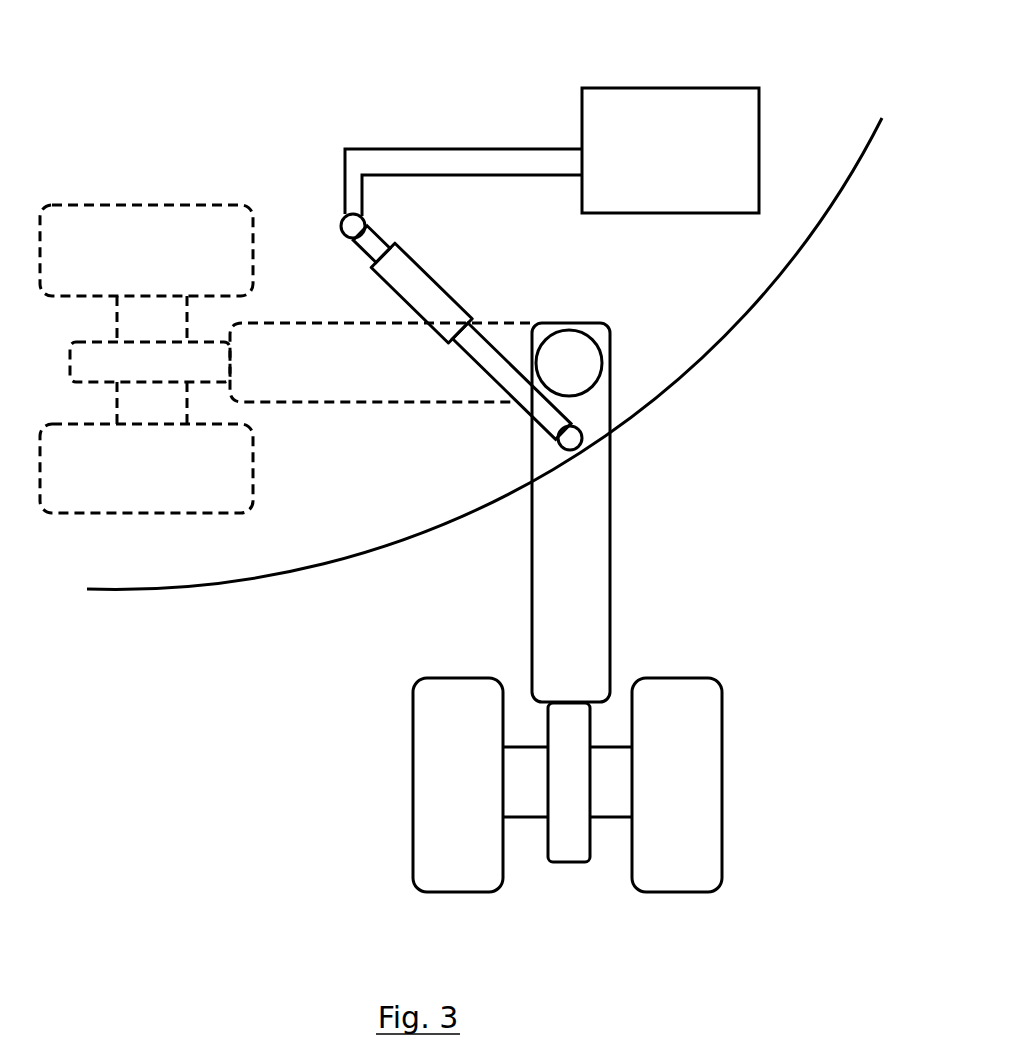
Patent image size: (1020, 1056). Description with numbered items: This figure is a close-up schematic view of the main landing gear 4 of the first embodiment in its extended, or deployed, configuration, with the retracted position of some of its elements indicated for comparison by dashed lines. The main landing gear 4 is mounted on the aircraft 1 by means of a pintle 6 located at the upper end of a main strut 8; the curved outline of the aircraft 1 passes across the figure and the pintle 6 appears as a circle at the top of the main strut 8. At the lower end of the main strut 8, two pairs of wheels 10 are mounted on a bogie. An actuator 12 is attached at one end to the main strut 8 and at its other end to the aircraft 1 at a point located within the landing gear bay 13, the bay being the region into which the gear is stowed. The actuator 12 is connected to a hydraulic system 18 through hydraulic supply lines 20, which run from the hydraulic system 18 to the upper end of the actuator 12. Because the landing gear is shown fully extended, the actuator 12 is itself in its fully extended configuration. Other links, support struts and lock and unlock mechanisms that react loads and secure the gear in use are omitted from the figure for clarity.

The aircraft 1 is at (807, 274).
The main landing gear 4 is at (746, 557).
The pintle 6 is at (582, 357).
The main strut 8 is at (588, 580).
The wheels 10 is at (758, 797).
The actuator 12 is at (428, 287).
The landing gear bay 13 is at (631, 291).
The hydraulic system 18 is at (646, 163).
The hydraulic supply lines 20 is at (472, 143).